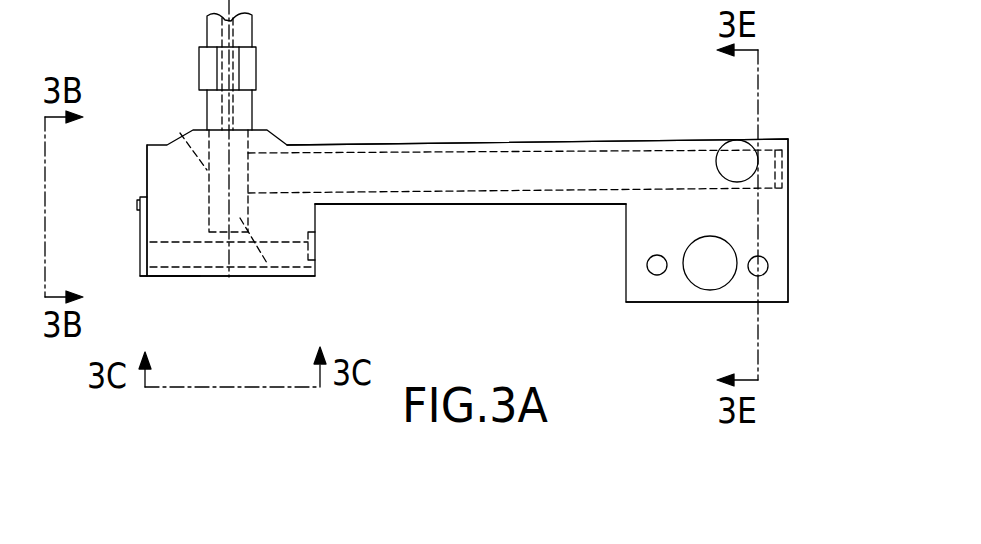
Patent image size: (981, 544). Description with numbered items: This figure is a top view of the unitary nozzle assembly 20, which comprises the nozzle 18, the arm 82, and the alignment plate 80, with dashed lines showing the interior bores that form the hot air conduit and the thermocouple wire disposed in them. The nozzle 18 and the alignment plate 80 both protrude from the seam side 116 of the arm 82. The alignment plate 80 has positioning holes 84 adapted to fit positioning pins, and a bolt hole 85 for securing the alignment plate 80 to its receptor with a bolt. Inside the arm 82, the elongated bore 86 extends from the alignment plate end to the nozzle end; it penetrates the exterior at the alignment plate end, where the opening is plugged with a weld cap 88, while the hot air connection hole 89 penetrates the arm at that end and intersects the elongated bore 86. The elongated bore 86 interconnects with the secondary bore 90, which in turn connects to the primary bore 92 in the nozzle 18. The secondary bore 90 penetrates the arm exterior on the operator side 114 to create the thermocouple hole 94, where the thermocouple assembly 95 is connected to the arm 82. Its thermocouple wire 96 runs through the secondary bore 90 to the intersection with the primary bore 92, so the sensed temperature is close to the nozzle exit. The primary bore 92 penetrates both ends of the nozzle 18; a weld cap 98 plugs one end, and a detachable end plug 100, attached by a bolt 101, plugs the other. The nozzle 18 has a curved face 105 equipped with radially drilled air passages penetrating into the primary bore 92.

The nozzle 18 is at (310, 276).
The unitary nozzle assembly 20 is at (550, 91).
The alignment plate 80 is at (680, 303).
The arm 82 is at (465, 205).
The positioning holes 84 is at (770, 265).
The bolt hole 85 is at (712, 277).
The elongated bore 86 is at (347, 167).
The weld cap 88 is at (785, 170).
The hot air connection hole 89 is at (730, 153).
The secondary bore 90 is at (180, 133).
The primary bore 92 is at (212, 250).
The thermocouple hole 94 is at (270, 127).
The thermocouple assembly 95 is at (257, 50).
The thermocouple wire 96 is at (265, 278).
The weld cap 98 is at (316, 245).
The detachable end plug 100 is at (140, 252).
The bolt 101 is at (137, 203).
The curved face 105 is at (153, 277).
The operator side 114 is at (627, 140).
The seam side 116 is at (527, 205).